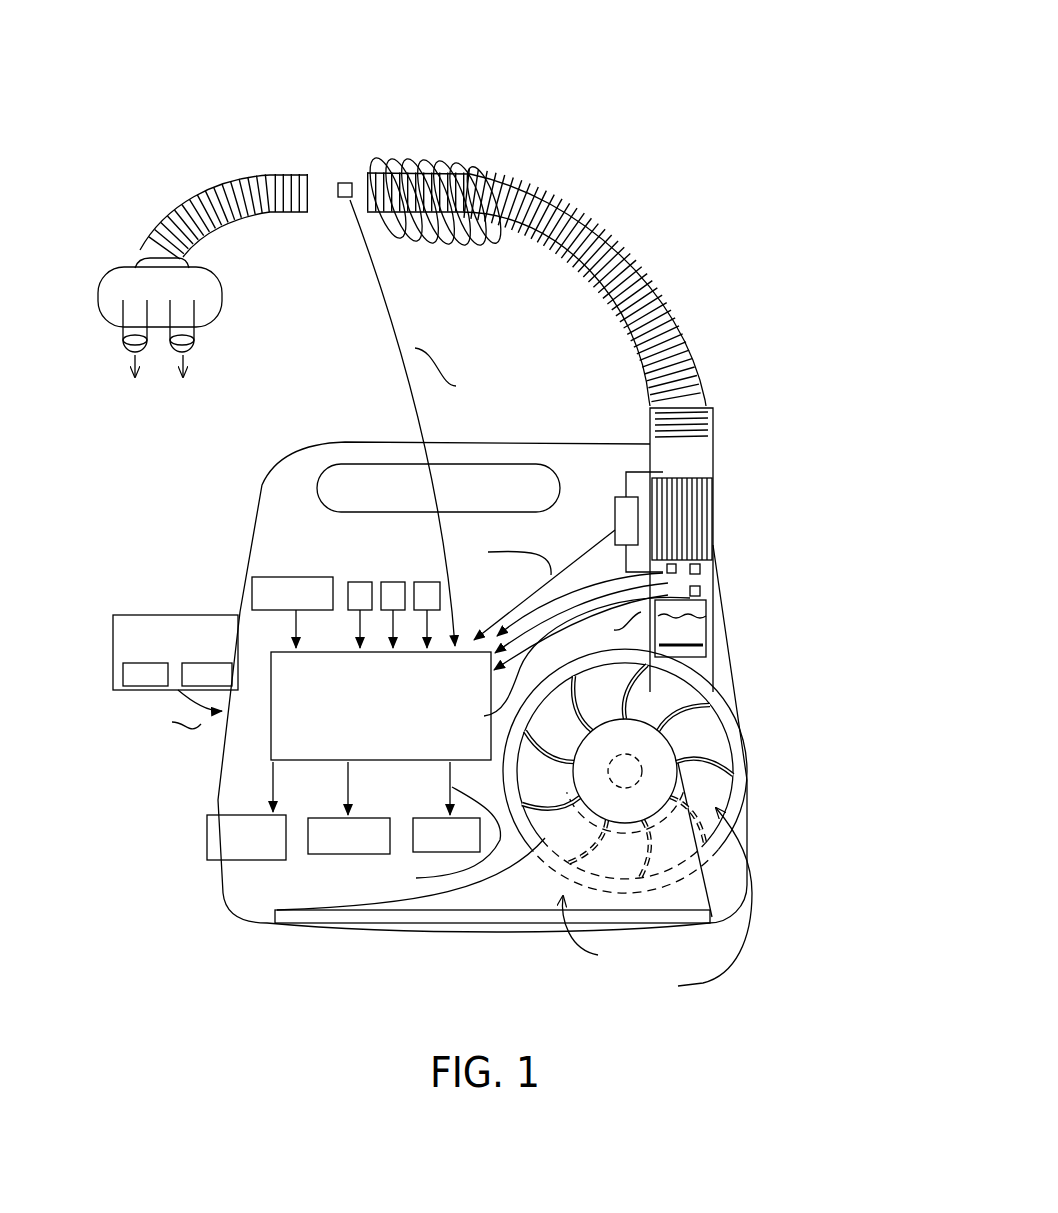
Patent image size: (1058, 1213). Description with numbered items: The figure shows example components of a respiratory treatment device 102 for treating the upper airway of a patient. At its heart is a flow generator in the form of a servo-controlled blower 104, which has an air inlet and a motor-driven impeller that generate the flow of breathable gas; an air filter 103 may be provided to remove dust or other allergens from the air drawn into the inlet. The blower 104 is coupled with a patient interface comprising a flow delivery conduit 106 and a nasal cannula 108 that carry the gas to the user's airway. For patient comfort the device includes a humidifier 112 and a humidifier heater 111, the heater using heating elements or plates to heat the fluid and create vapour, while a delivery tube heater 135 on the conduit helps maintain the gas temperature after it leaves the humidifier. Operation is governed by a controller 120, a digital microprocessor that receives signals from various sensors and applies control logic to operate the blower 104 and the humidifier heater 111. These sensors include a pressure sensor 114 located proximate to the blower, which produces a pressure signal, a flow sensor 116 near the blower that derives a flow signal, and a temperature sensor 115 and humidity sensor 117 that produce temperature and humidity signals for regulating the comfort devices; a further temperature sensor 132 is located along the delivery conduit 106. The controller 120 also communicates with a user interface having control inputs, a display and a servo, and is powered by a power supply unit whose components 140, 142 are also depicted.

The respiratory treatment device 102 is at (645, 88).
The air filter 103 is at (402, 926).
The servo-controlled blower 104 is at (731, 699).
The flow delivery conduit 106 is at (517, 240).
The nasal cannula 108 is at (200, 284).
The humidifier heater 111 is at (705, 645).
The humidifier 112 is at (707, 604).
The pressure sensor 114 is at (620, 583).
The temperature sensor 115 is at (714, 547).
The flow sensor 116 is at (609, 516).
The humidity sensor 117 is at (702, 570).
The controller 120 is at (270, 748).
The temperature sensor 132 is at (344, 182).
The delivery tube heater 135 is at (425, 178).
The power supply unit component 140 is at (145, 674).
The power supply unit component 142 is at (207, 674).